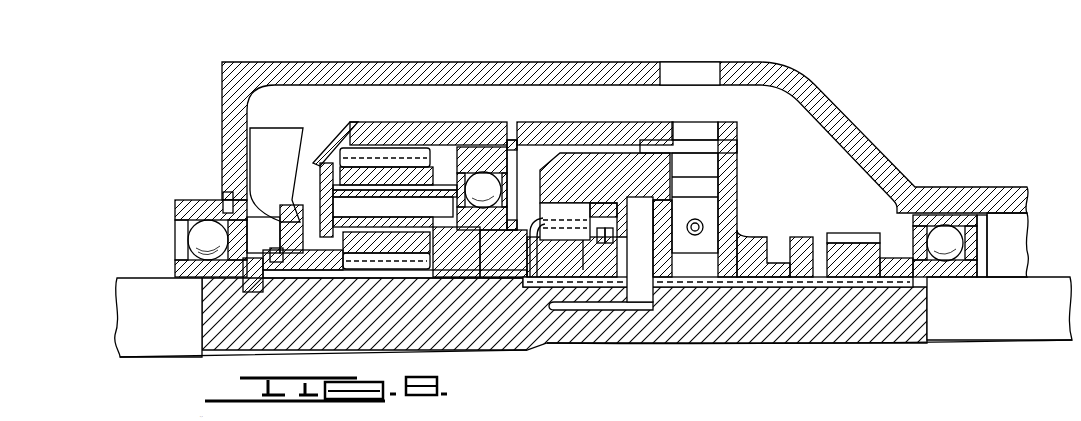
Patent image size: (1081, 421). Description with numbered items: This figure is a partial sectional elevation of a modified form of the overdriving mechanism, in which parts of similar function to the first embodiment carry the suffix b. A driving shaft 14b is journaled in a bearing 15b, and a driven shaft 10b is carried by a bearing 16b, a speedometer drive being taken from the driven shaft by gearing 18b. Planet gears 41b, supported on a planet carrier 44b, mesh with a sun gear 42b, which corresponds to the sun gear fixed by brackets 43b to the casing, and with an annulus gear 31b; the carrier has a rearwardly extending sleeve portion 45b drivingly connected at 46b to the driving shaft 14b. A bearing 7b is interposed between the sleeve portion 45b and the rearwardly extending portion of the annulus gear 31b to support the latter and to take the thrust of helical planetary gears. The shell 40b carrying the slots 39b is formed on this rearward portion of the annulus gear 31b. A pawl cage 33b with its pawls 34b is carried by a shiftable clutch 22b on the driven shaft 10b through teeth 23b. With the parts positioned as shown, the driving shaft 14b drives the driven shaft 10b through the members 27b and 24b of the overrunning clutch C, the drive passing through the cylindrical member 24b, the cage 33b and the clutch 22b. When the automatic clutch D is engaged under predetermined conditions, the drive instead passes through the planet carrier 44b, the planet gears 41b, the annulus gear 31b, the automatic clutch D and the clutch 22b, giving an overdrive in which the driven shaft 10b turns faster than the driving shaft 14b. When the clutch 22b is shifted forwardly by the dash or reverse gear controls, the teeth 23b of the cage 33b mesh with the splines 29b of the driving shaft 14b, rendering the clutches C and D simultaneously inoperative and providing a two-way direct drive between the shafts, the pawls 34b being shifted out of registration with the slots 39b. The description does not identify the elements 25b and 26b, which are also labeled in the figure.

The driven shaft 10b is at (942, 343).
The driving shaft 14b is at (343, 345).
The bearing 15b is at (188, 240).
The bearing 16b is at (960, 242).
The gearing 18b is at (838, 242).
The shiftable clutch 22b is at (800, 240).
The teeth 23b is at (757, 284).
The cylindrical member 24b is at (563, 157).
The pin 25b is at (548, 207).
The spring 26b is at (603, 230).
The member of overrunning clutch 27b is at (587, 268).
The splines 29b is at (563, 282).
The annulus gear 31b is at (355, 122).
The pawl cage 33b is at (723, 188).
The pawls 34b is at (700, 183).
The slots 39b is at (678, 130).
The shell 40b is at (655, 100).
The planet gears 41b is at (318, 170).
The sun gear 42b is at (363, 262).
The brackets 43b is at (233, 197).
The planet carrier 44b is at (447, 226).
The sleeve portion 45b is at (490, 270).
The driving connection 46b is at (445, 272).
The bearing 7b is at (482, 172).
The overrunning clutch C is at (530, 203).
The automatic clutch D is at (687, 256).